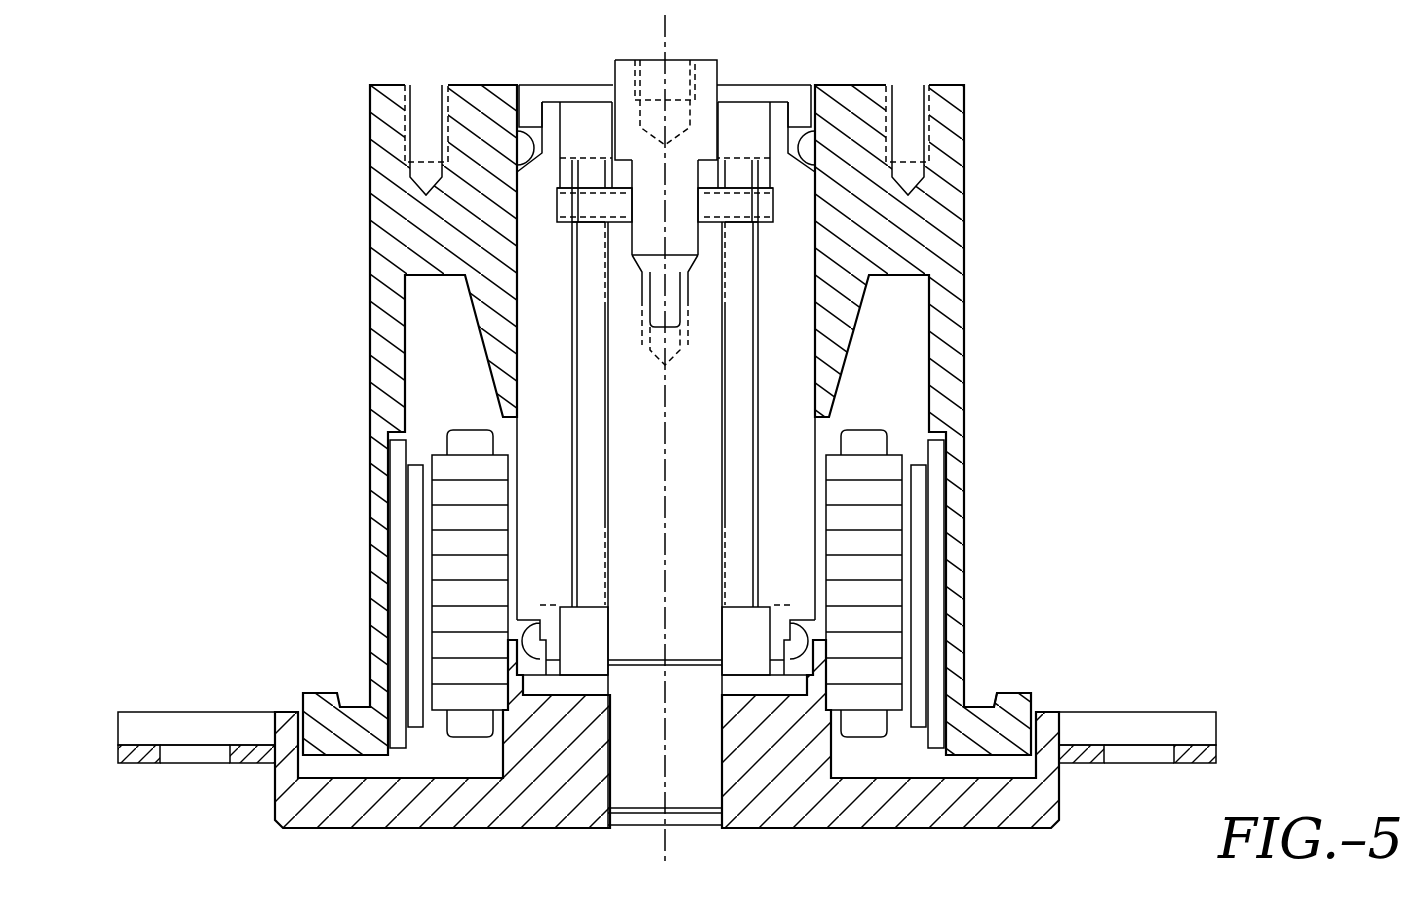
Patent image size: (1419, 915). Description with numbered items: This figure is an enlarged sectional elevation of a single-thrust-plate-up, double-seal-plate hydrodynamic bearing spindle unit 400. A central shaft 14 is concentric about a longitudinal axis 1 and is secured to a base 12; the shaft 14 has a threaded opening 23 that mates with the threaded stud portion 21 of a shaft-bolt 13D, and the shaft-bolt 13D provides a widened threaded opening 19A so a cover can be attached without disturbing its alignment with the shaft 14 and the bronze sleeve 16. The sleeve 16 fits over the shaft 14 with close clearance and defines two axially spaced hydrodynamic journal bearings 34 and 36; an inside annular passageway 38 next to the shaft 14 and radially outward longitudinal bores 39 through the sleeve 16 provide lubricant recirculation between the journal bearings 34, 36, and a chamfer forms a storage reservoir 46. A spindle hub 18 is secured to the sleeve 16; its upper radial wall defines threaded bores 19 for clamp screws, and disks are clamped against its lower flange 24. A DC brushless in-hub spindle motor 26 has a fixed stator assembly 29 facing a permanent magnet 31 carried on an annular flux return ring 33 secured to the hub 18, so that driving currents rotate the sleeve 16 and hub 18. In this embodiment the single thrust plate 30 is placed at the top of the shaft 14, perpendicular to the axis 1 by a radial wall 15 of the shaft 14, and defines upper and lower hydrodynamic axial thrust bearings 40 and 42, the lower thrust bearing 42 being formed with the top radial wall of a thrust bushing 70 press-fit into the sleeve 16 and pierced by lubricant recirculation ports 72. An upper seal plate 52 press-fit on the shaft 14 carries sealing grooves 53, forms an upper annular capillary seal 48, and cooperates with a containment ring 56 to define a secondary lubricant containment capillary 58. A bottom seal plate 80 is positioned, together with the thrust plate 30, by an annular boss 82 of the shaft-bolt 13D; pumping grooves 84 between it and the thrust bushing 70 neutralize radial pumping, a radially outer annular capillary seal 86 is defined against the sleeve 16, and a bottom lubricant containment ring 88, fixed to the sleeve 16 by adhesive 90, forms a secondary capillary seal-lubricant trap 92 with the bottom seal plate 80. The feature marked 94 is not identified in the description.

The HDB spindle unit 400 is at (667, 437).
The longitudinal axis 1 is at (662, 28).
The base 12 is at (770, 801).
The shaft-bolt 13D is at (712, 63).
The central shaft 14 is at (628, 458).
The lower radial wall 15 is at (705, 230).
The bronze sleeve 16 is at (533, 488).
The spindle hub 18 is at (945, 208).
The threaded bores 19 is at (905, 93).
The widened threaded opening 19A is at (682, 77).
The threaded stud portion 21 is at (672, 303).
The threaded opening 23 is at (685, 342).
The lower flange 24 is at (1010, 694).
The DC brushless in-hub spindle motor 26 is at (862, 757).
The stator assembly 29 is at (857, 435).
The thrust plate 30 is at (750, 210).
The permanent magnet 31 is at (918, 465).
The annular flux return ring 33 is at (934, 440).
The hydrodynamic journal bearing 34 is at (727, 282).
The hydrodynamic journal bearing 36 is at (730, 560).
The inside annular passageway 38 is at (608, 385).
The longitudinal bores 39 is at (572, 381).
The upper hydrodynamic axial thrust bearing 40 is at (590, 192).
The lower hydrodynamic axial thrust bearing 42 is at (590, 224).
The storage reservoir 46 is at (605, 605).
The upper annular capillary seal 48 is at (772, 646).
The upper seal plate 52 is at (588, 663).
The sealing grooves 53 is at (745, 606).
The containment ring 56 is at (548, 689).
The secondary lubricant containment capillary 58 is at (724, 673).
The thrust bushing 70 is at (768, 180).
The lubricant recirculation ports 72 is at (563, 173).
The bottom seal plate 80 is at (583, 113).
The annular boss 82 is at (608, 176).
The pumping grooves 84 is at (745, 150).
The radially outer annular capillary seal 86 is at (560, 110).
The bottom lubricant containment ring 88 is at (525, 86).
The adhesive 90 is at (523, 147).
The secondary capillary seal-lubricant trap 92 is at (597, 100).
The spacer seat 94 is at (727, 224).